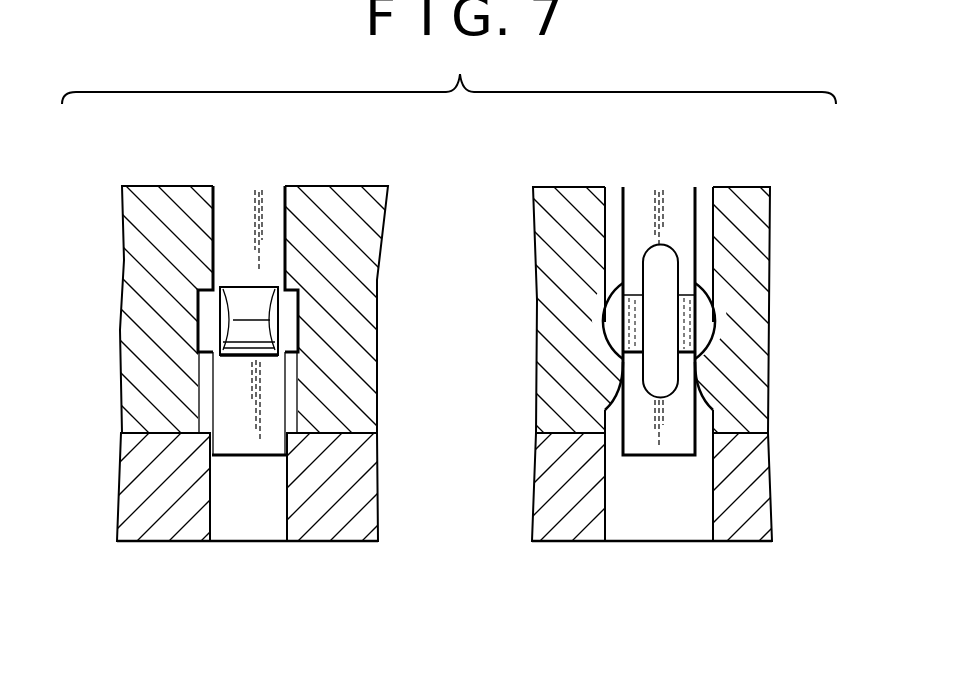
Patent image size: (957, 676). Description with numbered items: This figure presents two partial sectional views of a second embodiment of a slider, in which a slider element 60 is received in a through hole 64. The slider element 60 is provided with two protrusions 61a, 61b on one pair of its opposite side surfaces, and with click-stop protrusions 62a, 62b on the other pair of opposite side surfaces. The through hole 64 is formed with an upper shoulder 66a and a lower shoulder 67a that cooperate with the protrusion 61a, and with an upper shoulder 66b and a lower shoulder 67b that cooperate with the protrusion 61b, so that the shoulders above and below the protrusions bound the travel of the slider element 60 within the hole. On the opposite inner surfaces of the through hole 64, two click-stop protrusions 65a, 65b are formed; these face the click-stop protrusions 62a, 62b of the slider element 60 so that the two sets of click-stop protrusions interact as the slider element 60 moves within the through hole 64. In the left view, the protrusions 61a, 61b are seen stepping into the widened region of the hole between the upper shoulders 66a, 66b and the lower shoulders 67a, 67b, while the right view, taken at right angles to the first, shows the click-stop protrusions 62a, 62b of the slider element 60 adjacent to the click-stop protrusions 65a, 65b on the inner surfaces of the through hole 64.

The slider element 60 is at (239, 203).
The protrusion 61a is at (207, 318).
The protrusion 61b is at (292, 304).
The click-stop protrusion 62a is at (263, 330).
The click-stop protrusion 62b is at (703, 318).
The through hole 64 is at (263, 522).
The click-stop protrusion 65a is at (613, 377).
The click-stop protrusion 65b is at (703, 378).
The upper shoulder 66a is at (203, 286).
The upper shoulder 66b is at (293, 286).
The lower shoulder 67a is at (210, 440).
The lower shoulder 67b is at (292, 440).